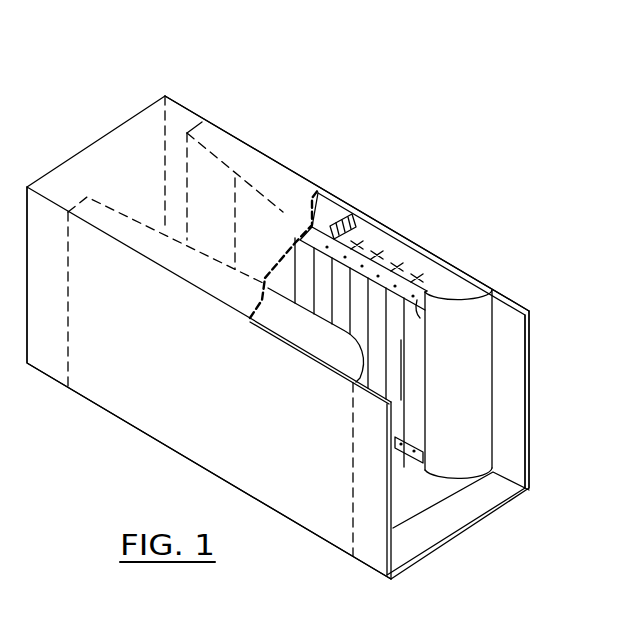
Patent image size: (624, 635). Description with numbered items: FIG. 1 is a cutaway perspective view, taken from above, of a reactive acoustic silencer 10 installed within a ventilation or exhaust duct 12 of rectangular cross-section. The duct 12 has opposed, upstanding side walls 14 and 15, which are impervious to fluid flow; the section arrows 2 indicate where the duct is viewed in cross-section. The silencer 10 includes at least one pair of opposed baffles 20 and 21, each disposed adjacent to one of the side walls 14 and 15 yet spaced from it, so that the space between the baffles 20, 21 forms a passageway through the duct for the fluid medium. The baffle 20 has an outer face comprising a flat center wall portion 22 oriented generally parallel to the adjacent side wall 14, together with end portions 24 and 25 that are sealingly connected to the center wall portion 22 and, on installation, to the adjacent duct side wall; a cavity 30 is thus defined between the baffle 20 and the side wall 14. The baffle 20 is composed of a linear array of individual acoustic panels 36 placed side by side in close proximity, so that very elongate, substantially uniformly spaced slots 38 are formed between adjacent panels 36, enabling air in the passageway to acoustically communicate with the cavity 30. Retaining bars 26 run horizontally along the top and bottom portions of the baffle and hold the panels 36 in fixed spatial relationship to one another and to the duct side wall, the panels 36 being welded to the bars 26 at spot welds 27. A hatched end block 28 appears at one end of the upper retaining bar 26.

The section line 2 is at (80, 143).
The silencer 10 is at (247, 70).
The ventilation or exhaust duct 12 is at (118, 126).
The side wall 14 is at (517, 380).
The side wall 15 is at (191, 390).
The baffle 20 is at (267, 180).
The baffle 21 is at (318, 330).
The center wall portion 22 is at (287, 250).
The end portion 24 is at (469, 458).
The end portion 25 is at (218, 203).
The retaining bars 26 is at (417, 306).
The spot welds 27 is at (312, 232).
The end block 28 is at (350, 214).
The cavity 30 is at (398, 244).
The acoustic panels 36 is at (410, 268).
The slots 38 is at (402, 352).